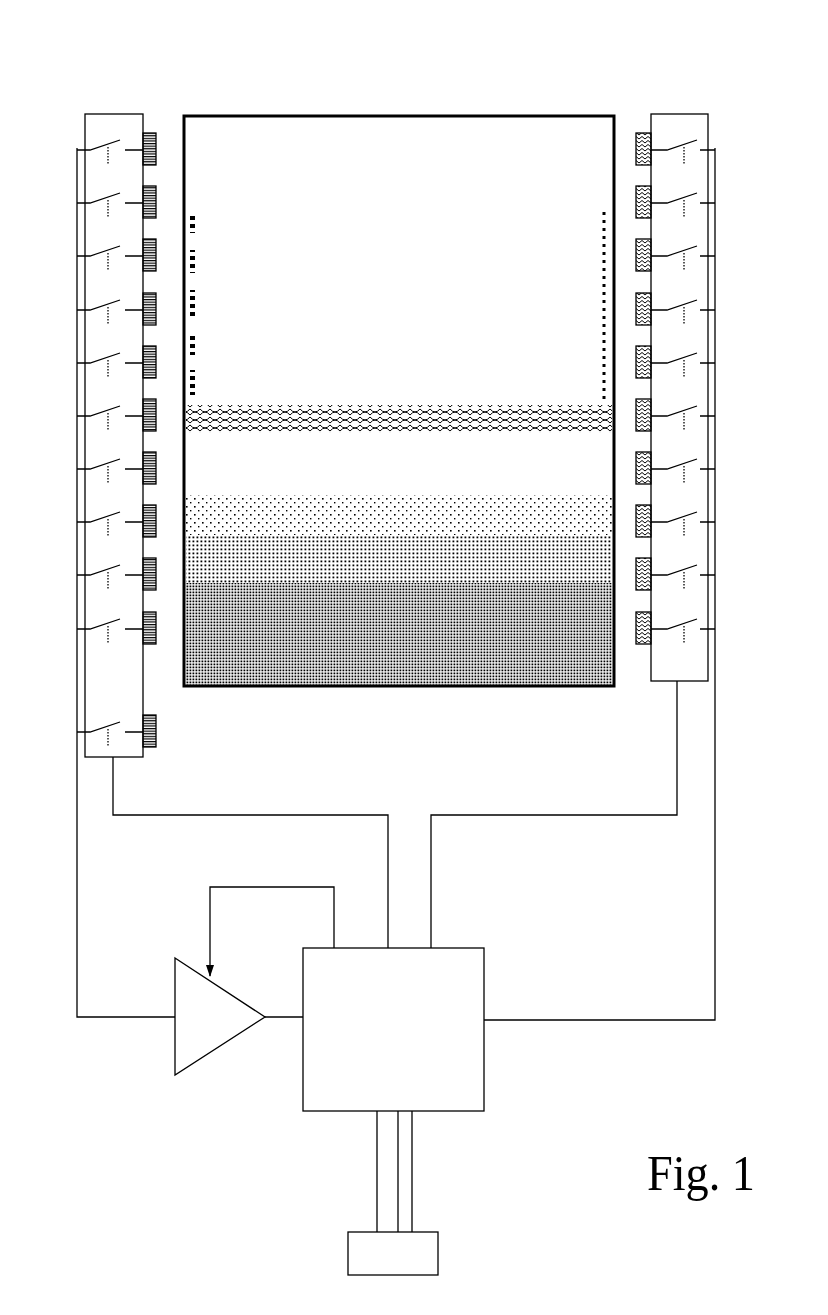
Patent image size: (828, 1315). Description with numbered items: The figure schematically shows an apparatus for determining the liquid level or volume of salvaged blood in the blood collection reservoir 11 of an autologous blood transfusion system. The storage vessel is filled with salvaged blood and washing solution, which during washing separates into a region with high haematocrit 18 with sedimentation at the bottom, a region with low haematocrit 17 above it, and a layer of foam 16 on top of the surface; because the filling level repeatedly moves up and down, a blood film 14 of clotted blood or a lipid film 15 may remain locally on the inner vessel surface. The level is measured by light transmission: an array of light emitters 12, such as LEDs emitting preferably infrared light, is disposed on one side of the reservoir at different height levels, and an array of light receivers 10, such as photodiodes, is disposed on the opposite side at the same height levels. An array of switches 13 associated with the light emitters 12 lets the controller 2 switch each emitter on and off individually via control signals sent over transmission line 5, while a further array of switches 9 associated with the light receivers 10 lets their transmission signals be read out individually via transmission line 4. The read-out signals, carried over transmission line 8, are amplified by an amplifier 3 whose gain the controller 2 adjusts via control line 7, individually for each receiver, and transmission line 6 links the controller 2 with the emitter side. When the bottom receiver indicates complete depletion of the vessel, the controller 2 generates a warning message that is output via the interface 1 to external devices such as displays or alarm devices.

The interface 1 is at (440, 1255).
The controller 2 is at (471, 978).
The amplifier 3 is at (190, 1040).
The transmission line 4 is at (386, 870).
The transmission line 5 is at (434, 888).
The transmission line 6 is at (717, 925).
The control line 7 is at (207, 895).
The transmission line 8 is at (78, 907).
The array of switches 9 is at (112, 111).
The array of light receivers 10 is at (148, 128).
The blood collection reservoir 11 is at (478, 110).
The array of light emitters 12 is at (641, 130).
The array of switches 13 is at (680, 112).
The blood film 14 is at (202, 257).
The lipid film 15 is at (594, 251).
The foam 16 is at (305, 410).
The region with low haematocrit 17 is at (390, 456).
The region with high haematocrit 18 is at (438, 650).